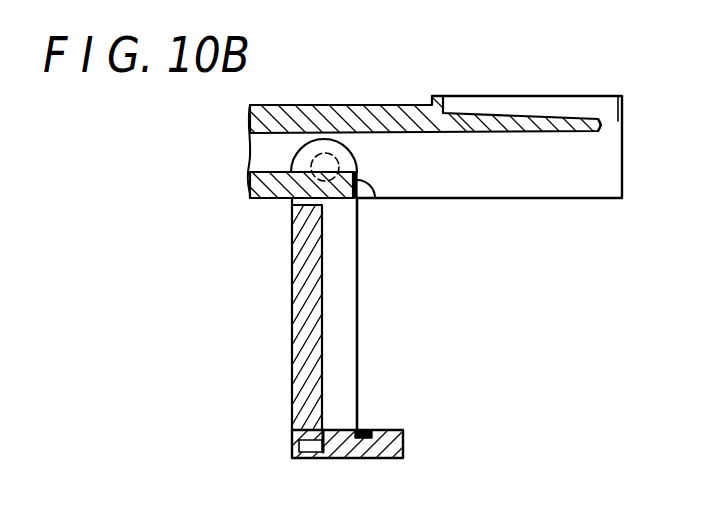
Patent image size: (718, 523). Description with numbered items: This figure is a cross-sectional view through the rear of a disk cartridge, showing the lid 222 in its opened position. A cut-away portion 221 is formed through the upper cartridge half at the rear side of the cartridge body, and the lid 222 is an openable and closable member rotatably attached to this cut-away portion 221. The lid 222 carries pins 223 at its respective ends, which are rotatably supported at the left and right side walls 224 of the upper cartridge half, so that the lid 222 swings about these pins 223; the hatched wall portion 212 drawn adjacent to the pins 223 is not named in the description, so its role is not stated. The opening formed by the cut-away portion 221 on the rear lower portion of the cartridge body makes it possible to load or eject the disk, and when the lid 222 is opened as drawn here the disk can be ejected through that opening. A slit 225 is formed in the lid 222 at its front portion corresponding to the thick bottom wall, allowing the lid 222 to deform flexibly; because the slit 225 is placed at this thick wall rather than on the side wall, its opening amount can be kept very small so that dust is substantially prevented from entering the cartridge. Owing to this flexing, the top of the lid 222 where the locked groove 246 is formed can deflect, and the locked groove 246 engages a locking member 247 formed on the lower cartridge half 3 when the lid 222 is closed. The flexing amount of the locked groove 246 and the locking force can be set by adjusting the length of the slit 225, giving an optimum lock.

The lower cartridge half 3 is at (418, 110).
The support bar 212 is at (273, 190).
The cut-away portion 221 is at (377, 200).
The lid 222 is at (403, 447).
The pins 223 is at (325, 153).
The side walls 224 is at (553, 188).
The slit 225 is at (303, 447).
The locked groove 246 is at (370, 433).
The locking member 247 is at (603, 121).